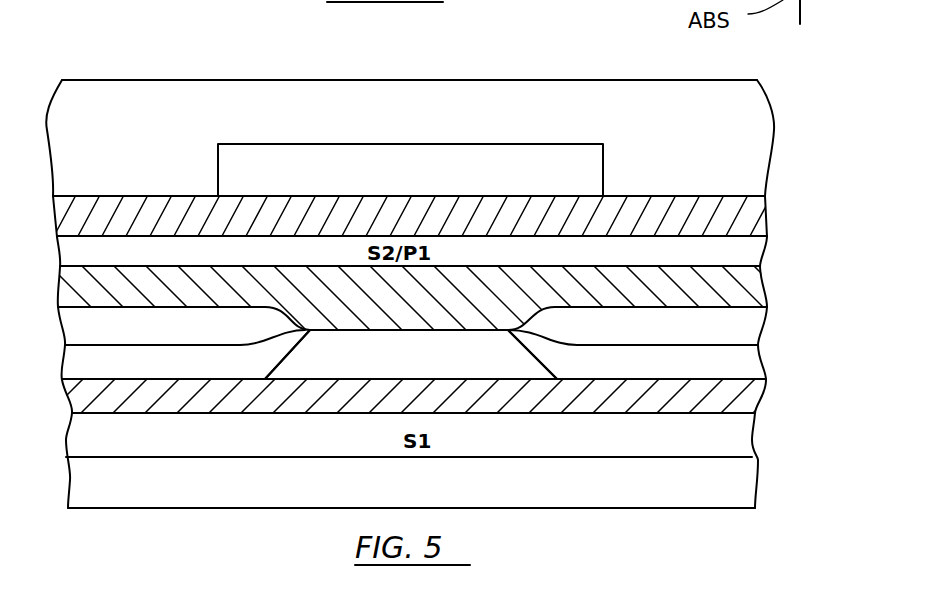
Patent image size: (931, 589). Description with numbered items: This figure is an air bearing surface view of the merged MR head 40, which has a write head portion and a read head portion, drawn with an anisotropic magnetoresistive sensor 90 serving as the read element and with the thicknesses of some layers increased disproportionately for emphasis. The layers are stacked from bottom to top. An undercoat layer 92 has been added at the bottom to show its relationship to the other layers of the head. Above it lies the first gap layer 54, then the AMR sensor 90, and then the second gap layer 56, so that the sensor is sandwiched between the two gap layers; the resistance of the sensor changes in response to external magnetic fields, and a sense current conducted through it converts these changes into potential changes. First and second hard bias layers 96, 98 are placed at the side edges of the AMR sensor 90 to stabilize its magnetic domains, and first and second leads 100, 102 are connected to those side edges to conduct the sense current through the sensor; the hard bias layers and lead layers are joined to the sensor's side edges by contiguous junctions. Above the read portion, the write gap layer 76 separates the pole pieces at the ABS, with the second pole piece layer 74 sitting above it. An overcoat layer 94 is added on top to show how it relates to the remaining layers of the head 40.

The merged MR head 40 is at (222, 53).
The first gap layer 54 is at (740, 394).
The second gap layer 56 is at (735, 287).
The second pole piece layer 74 is at (503, 157).
The write gap layer 76 is at (735, 216).
The anisotropic magnetoresistive (AMR) sensor 90 is at (518, 358).
The undercoat layer 92 is at (737, 488).
The overcoat layer 94 is at (648, 122).
The first hard bias layer 96 is at (80, 363).
The second hard bias layer 98 is at (735, 360).
The first lead 100 is at (78, 326).
The second lead 102 is at (735, 323).